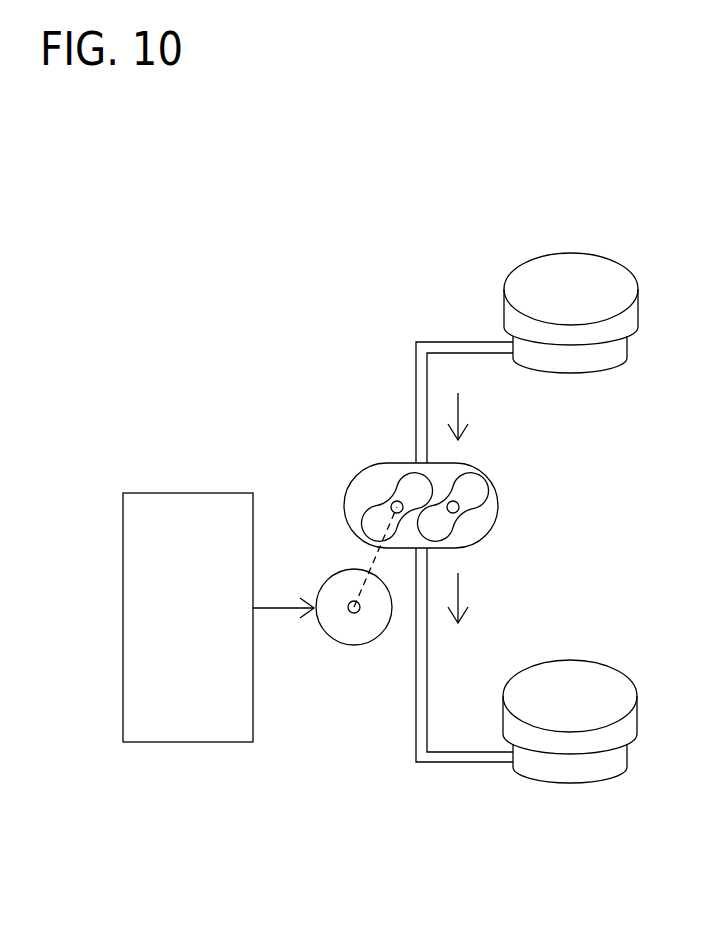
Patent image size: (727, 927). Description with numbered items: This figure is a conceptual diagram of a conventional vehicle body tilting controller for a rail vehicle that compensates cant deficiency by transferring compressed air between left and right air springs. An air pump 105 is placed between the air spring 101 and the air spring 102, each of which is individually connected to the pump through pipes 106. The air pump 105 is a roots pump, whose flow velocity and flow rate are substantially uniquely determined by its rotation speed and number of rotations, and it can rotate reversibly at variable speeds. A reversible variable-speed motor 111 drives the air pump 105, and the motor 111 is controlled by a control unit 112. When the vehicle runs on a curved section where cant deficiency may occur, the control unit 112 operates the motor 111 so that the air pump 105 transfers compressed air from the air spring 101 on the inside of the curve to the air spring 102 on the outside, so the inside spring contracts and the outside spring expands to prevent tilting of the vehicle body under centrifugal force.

The air spring 101 is at (567, 262).
The air spring 102 is at (567, 672).
The air pump 105 is at (500, 513).
The pipe 106 is at (417, 402).
The reversible variable-speed motor 111 is at (348, 635).
The control unit 112 is at (180, 733).